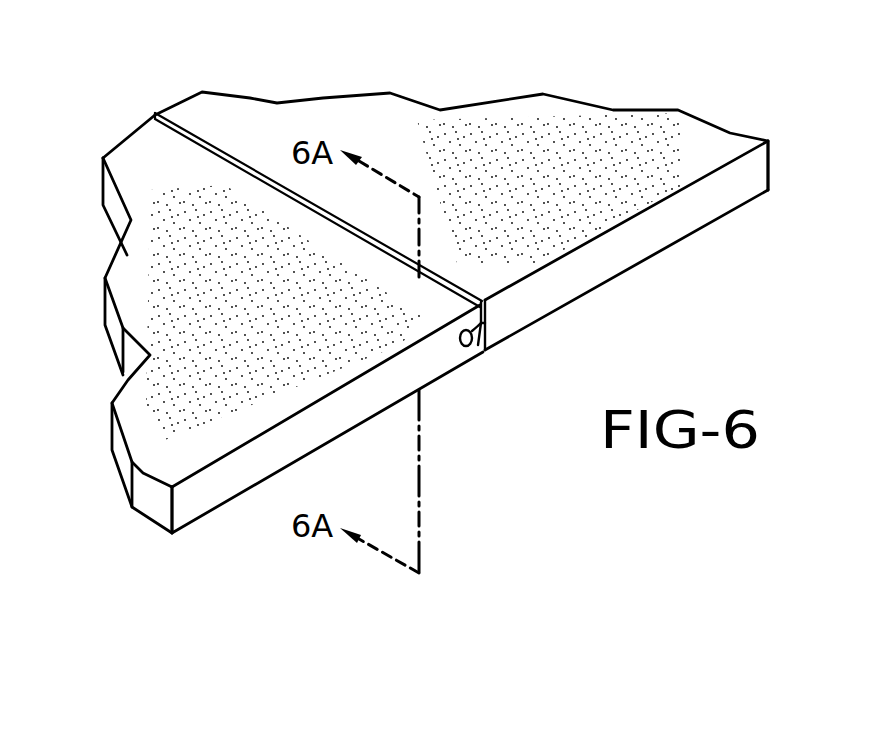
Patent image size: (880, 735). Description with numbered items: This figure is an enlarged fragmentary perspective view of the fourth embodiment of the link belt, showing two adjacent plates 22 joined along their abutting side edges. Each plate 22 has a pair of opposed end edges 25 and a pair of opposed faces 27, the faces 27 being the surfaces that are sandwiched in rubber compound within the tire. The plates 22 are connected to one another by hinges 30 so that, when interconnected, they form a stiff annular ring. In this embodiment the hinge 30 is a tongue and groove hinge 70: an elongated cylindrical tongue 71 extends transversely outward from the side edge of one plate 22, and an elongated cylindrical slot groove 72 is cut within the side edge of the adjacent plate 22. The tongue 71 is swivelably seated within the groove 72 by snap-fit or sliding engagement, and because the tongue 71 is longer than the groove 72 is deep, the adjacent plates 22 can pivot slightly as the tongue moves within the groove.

The plate 22 is at (488, 113).
The end edge 25 is at (647, 239).
The face 27 is at (578, 143).
The hinge 30 is at (497, 397).
The tongue and groove hinge 70 is at (498, 353).
The tongue 71 is at (467, 340).
The groove 72 is at (475, 346).